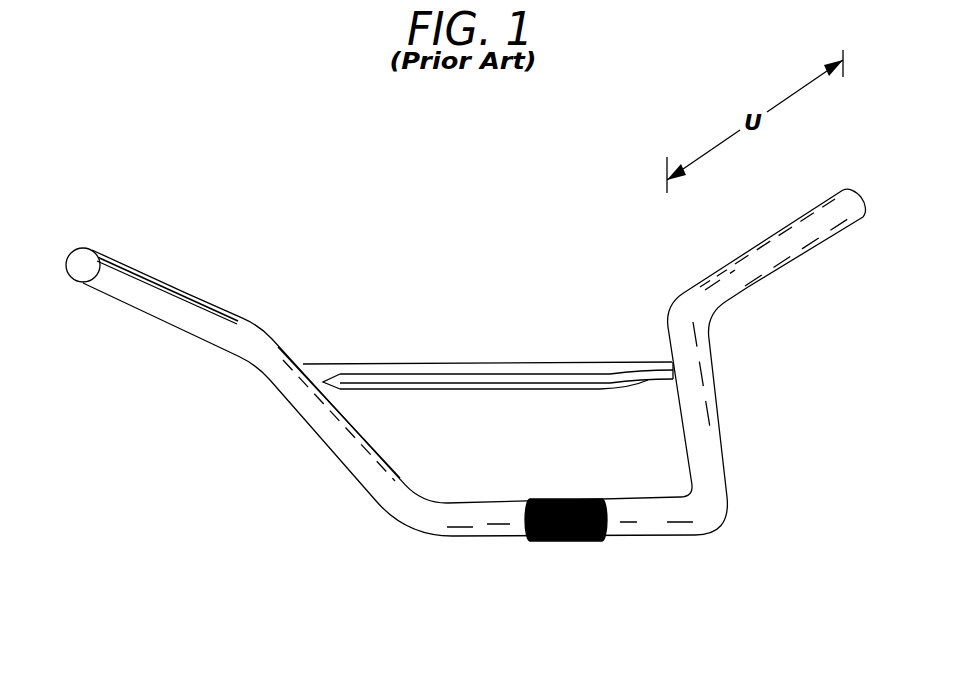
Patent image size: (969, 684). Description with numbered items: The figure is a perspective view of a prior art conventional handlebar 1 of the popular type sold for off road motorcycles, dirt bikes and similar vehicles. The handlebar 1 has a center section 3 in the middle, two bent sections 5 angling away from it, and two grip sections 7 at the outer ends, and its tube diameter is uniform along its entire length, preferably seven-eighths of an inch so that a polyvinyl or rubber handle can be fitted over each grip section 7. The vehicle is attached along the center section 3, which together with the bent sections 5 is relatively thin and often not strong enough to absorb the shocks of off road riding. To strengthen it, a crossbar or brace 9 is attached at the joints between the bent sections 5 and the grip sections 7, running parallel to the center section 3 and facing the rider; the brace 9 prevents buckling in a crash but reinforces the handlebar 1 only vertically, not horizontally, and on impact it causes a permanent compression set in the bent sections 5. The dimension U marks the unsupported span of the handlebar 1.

The conventional handlebar 1 is at (382, 218).
The center section 3 is at (422, 538).
The bent sections 5 is at (337, 460).
The grip sections 7 is at (123, 257).
The crossbar or brace 9 is at (498, 362).